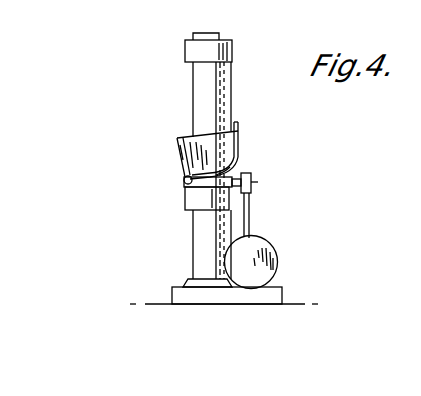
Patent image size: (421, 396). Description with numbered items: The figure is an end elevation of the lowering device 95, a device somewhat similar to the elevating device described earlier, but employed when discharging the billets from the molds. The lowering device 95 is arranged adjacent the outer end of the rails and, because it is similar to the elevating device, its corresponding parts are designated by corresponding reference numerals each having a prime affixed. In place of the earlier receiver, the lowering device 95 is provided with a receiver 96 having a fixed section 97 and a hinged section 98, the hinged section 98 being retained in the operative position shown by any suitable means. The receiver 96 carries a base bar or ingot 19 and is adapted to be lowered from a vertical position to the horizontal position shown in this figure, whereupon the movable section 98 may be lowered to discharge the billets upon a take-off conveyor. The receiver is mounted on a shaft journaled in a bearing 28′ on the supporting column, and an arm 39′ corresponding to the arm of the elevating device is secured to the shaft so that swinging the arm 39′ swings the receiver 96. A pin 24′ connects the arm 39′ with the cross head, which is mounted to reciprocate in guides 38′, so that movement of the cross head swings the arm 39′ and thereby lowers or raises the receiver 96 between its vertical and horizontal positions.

The lowering device 95 is at (205, 88).
The base bar or ingot 19 is at (206, 129).
The receiver 96 is at (243, 124).
The fixed section 97 is at (240, 161).
The hinged section 98 is at (178, 148).
The bearing 28′ is at (183, 183).
The pin 24′ is at (258, 182).
The arm 39′ is at (250, 227).
The guides 38′ is at (270, 263).